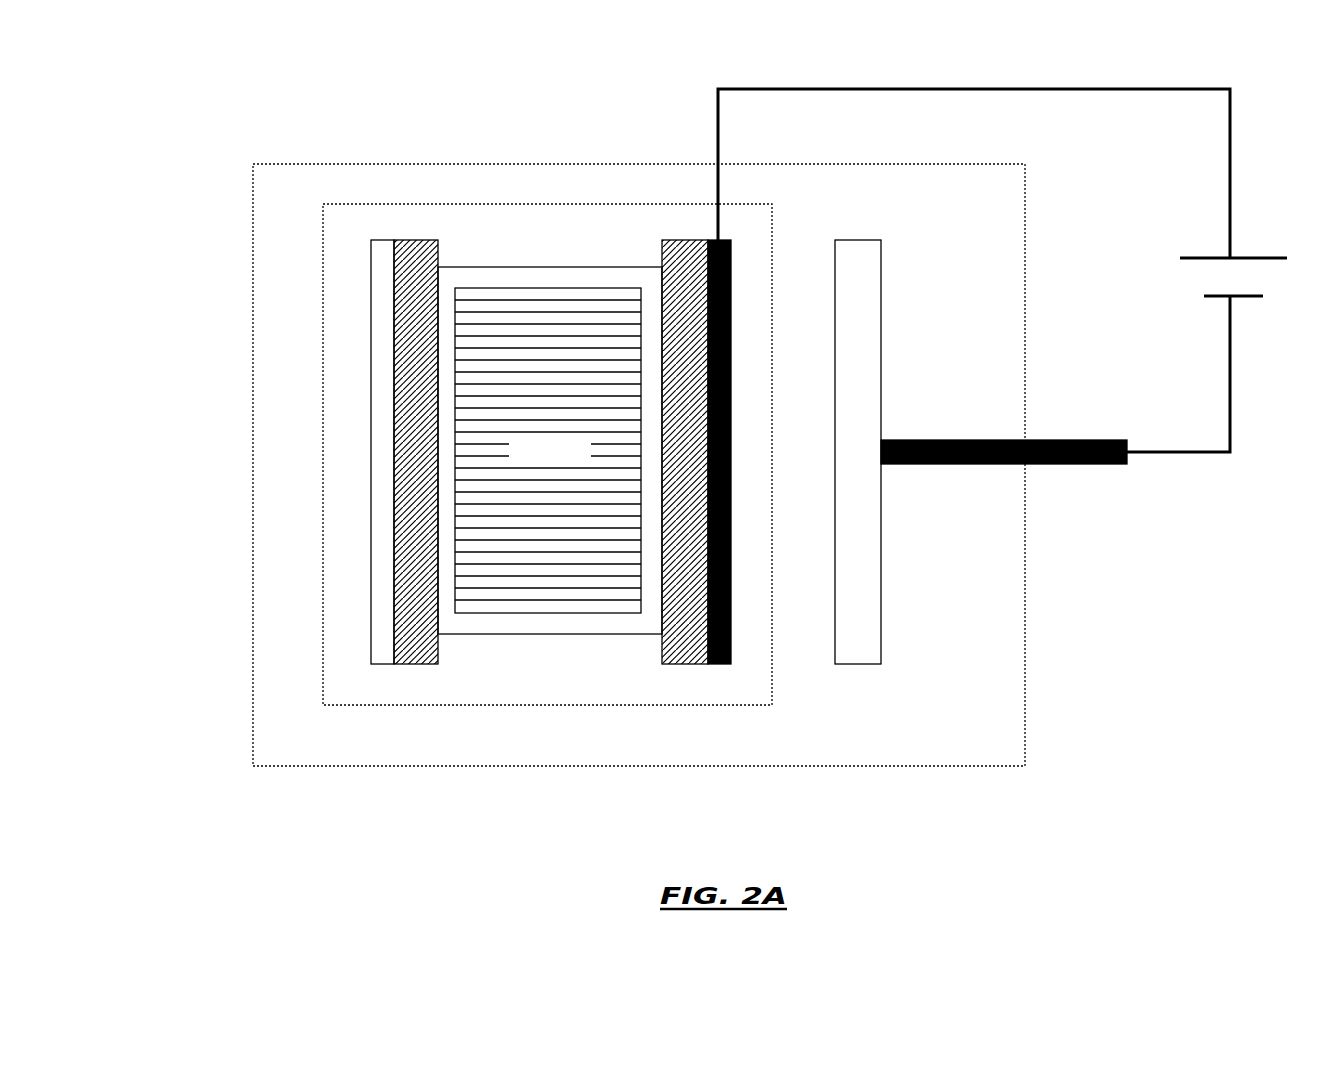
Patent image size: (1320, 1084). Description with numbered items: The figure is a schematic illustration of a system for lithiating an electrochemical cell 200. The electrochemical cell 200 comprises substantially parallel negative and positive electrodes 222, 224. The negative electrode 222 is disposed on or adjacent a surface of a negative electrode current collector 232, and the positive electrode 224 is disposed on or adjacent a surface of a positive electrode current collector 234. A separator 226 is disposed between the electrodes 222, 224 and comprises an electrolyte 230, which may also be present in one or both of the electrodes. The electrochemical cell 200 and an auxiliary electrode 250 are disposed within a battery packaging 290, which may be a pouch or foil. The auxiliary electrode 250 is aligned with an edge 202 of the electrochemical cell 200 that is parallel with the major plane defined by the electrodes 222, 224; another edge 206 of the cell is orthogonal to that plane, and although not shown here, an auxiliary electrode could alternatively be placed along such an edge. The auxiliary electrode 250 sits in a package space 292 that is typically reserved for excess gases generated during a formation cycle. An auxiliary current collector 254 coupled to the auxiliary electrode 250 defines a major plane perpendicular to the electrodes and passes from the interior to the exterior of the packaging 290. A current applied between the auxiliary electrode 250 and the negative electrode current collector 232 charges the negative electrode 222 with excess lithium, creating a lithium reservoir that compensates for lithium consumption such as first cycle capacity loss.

The electrochemical cell 200 is at (307, 217).
The edge 202 is at (787, 244).
The edge 206 is at (540, 718).
The negative electrode 222 is at (683, 664).
The positive electrode 224 is at (413, 664).
The separator 226 is at (550, 634).
The electrolyte 230 is at (548, 450).
The negative electrode current collector 232 is at (720, 664).
The positive electrode current collector 234 is at (371, 452).
The auxiliary electrode 250 is at (855, 664).
The auxiliary current collector 254 is at (1094, 464).
The battery packaging 290 is at (253, 347).
The package space 292 is at (974, 676).